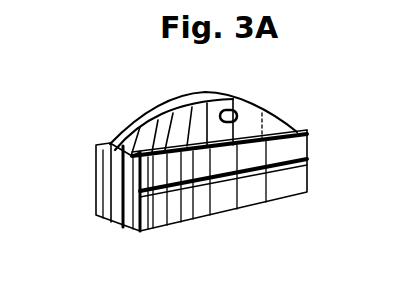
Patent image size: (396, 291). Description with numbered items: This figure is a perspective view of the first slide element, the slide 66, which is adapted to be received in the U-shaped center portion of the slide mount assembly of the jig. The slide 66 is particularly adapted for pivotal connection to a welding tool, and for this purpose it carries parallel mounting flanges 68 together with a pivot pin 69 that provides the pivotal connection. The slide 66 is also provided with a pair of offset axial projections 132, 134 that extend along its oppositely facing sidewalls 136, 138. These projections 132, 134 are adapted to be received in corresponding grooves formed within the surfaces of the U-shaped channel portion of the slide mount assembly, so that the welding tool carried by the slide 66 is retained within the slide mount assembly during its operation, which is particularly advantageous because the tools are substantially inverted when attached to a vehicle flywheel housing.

The slide 66 is at (196, 171).
The parallel mounting flanges 68 is at (214, 112).
The pivot pin 69 is at (243, 110).
The offset axial projection 132 is at (86, 187).
The offset axial projection 134 is at (295, 172).
The sidewall 136 is at (100, 168).
The sidewall 138 is at (308, 150).